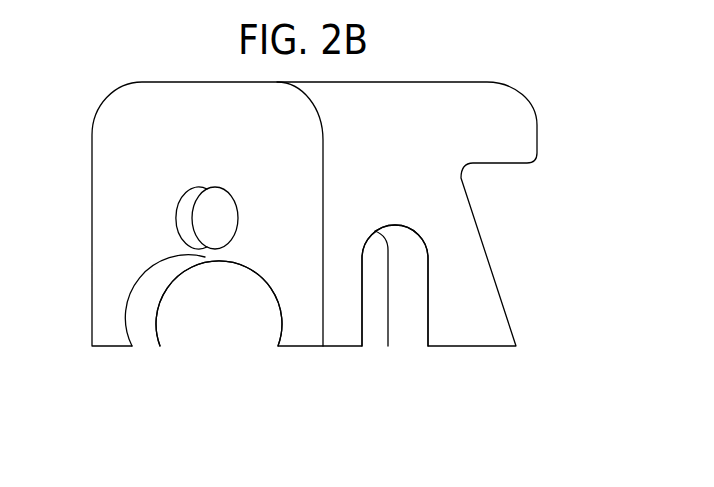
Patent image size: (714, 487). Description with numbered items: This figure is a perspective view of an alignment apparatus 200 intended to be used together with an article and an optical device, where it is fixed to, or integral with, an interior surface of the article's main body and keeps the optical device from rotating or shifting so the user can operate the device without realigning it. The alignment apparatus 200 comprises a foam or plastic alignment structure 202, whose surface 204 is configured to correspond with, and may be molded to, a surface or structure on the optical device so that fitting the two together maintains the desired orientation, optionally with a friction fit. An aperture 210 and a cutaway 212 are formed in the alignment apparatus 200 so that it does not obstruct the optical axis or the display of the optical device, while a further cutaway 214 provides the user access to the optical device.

The alignment apparatus 200 is at (466, 49).
The alignment structure 202 is at (138, 131).
The surface 204 is at (243, 369).
The aperture 210 is at (212, 218).
The cutaway 212 is at (192, 311).
The cutaway 214 is at (376, 337).